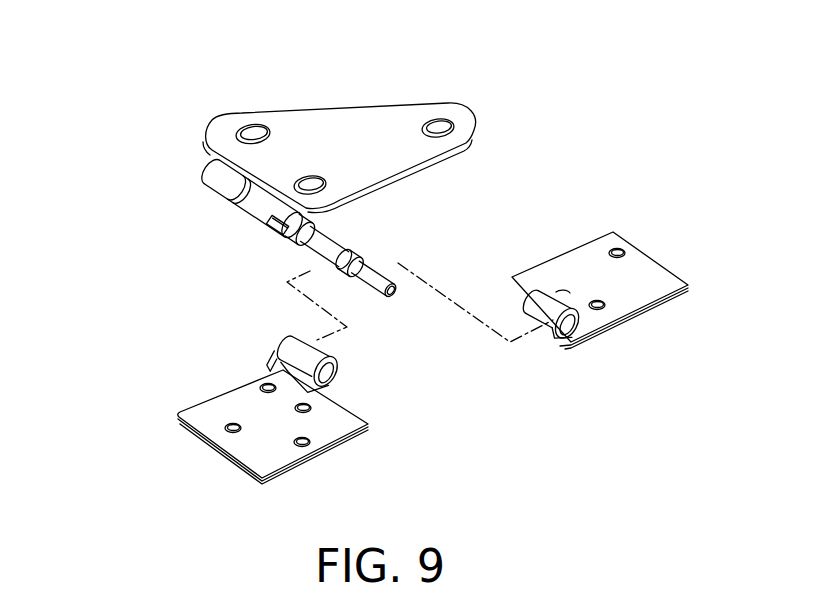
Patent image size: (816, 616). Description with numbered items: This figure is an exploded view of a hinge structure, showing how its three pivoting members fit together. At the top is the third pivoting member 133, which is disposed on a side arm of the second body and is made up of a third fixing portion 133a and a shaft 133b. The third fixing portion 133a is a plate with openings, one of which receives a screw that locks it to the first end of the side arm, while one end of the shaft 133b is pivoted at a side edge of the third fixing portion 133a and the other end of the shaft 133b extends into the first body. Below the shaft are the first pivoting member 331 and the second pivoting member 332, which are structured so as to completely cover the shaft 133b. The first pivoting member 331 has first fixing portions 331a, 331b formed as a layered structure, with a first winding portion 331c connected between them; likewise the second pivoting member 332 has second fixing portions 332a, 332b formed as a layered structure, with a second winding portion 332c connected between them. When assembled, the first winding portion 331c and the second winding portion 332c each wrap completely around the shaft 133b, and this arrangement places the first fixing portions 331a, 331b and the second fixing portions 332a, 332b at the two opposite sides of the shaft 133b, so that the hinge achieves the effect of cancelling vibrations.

The third pivoting member 133 is at (327, 55).
The third fixing portion 133a is at (313, 135).
The shaft 133b is at (225, 177).
The first pivoting member 331 is at (91, 305).
The first fixing portion 331a is at (202, 415).
The first fixing portion 331b is at (190, 428).
The first winding portion 331c is at (292, 343).
The second pivoting member 332 is at (703, 432).
The second fixing portion 332a is at (620, 300).
The second fixing portion 332b is at (663, 305).
The second winding portion 332c is at (548, 320).